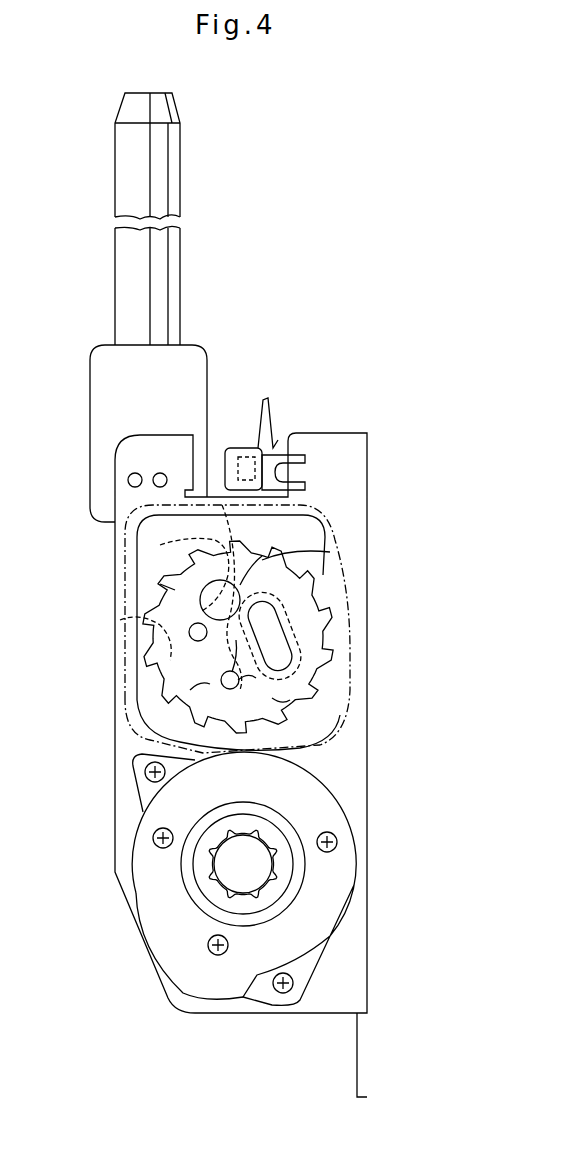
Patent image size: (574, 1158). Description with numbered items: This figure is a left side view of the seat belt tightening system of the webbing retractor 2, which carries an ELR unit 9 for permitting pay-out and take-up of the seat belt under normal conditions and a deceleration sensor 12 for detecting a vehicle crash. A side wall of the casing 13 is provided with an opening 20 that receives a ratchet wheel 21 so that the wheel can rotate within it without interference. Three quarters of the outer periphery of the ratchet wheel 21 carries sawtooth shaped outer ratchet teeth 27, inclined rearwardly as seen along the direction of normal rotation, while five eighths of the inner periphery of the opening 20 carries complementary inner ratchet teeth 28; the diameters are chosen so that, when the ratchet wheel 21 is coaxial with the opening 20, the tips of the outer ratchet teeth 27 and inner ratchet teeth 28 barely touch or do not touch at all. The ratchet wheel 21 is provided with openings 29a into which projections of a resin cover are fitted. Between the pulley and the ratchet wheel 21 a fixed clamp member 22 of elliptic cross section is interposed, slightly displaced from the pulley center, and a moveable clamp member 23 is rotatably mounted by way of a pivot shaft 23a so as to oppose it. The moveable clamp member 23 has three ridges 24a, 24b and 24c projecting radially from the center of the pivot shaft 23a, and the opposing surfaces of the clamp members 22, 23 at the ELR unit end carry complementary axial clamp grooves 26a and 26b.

The webbing retractor 2 is at (453, 430).
The ELR unit 9 is at (338, 850).
The deceleration sensor 12 is at (188, 378).
The casing 13 is at (362, 524).
The opening 20 is at (272, 698).
The ratchet wheel 21 is at (322, 625).
The fixed clamp member 22 is at (292, 656).
The moveable clamp member 23 is at (205, 655).
The pivot shaft 23a is at (240, 585).
The ridge 24a is at (222, 505).
The ridge 24b is at (160, 545).
The ridge 24c is at (120, 620).
The axial clamp grooves 26a is at (238, 680).
The axial clamp grooves 26b is at (190, 690).
The outer ratchet teeth 27 is at (330, 552).
The inner ratchet teeth 28 is at (160, 584).
The openings 29a is at (190, 634).